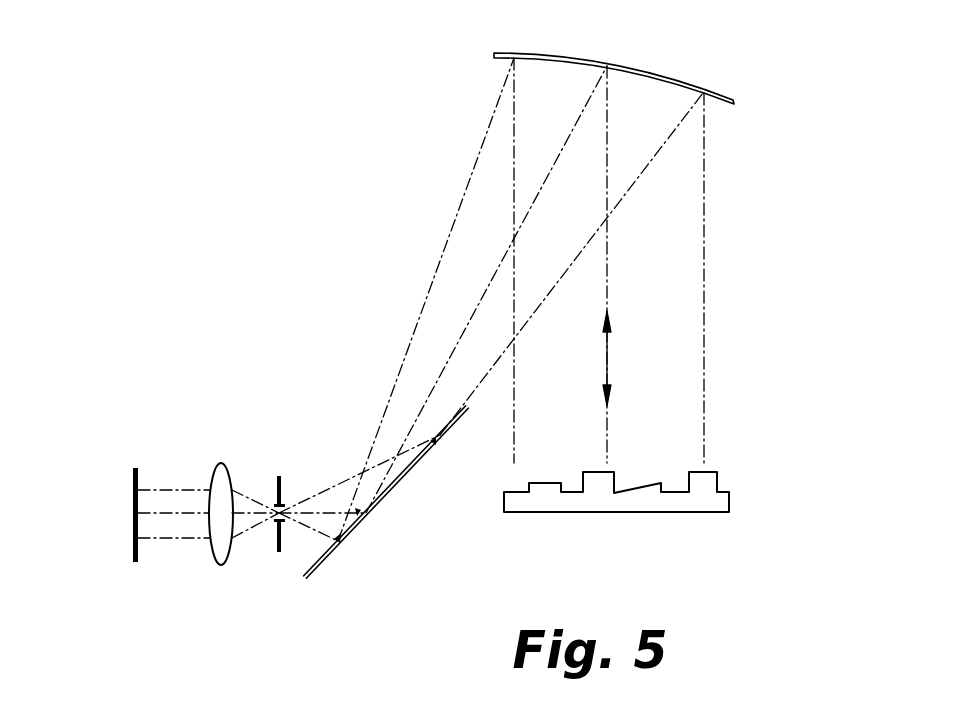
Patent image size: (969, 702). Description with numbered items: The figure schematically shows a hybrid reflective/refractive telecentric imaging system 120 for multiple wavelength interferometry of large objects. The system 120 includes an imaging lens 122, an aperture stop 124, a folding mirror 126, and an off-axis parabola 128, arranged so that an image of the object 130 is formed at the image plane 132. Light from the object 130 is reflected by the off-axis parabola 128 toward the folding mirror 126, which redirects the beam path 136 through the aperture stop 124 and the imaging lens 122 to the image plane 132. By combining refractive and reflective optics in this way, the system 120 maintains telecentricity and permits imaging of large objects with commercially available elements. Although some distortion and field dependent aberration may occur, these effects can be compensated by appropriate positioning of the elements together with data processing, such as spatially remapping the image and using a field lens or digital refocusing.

The hybrid reflective/refractive telecentric imaging system 120 is at (232, 181).
The imaging lens 122 is at (222, 565).
The aperture stop 124 is at (277, 490).
The folding mirror 126 is at (327, 562).
The off-axis parabola 128 is at (593, 60).
The object 130 is at (632, 515).
The image plane 132 is at (133, 488).
The beam path 136 is at (416, 279).